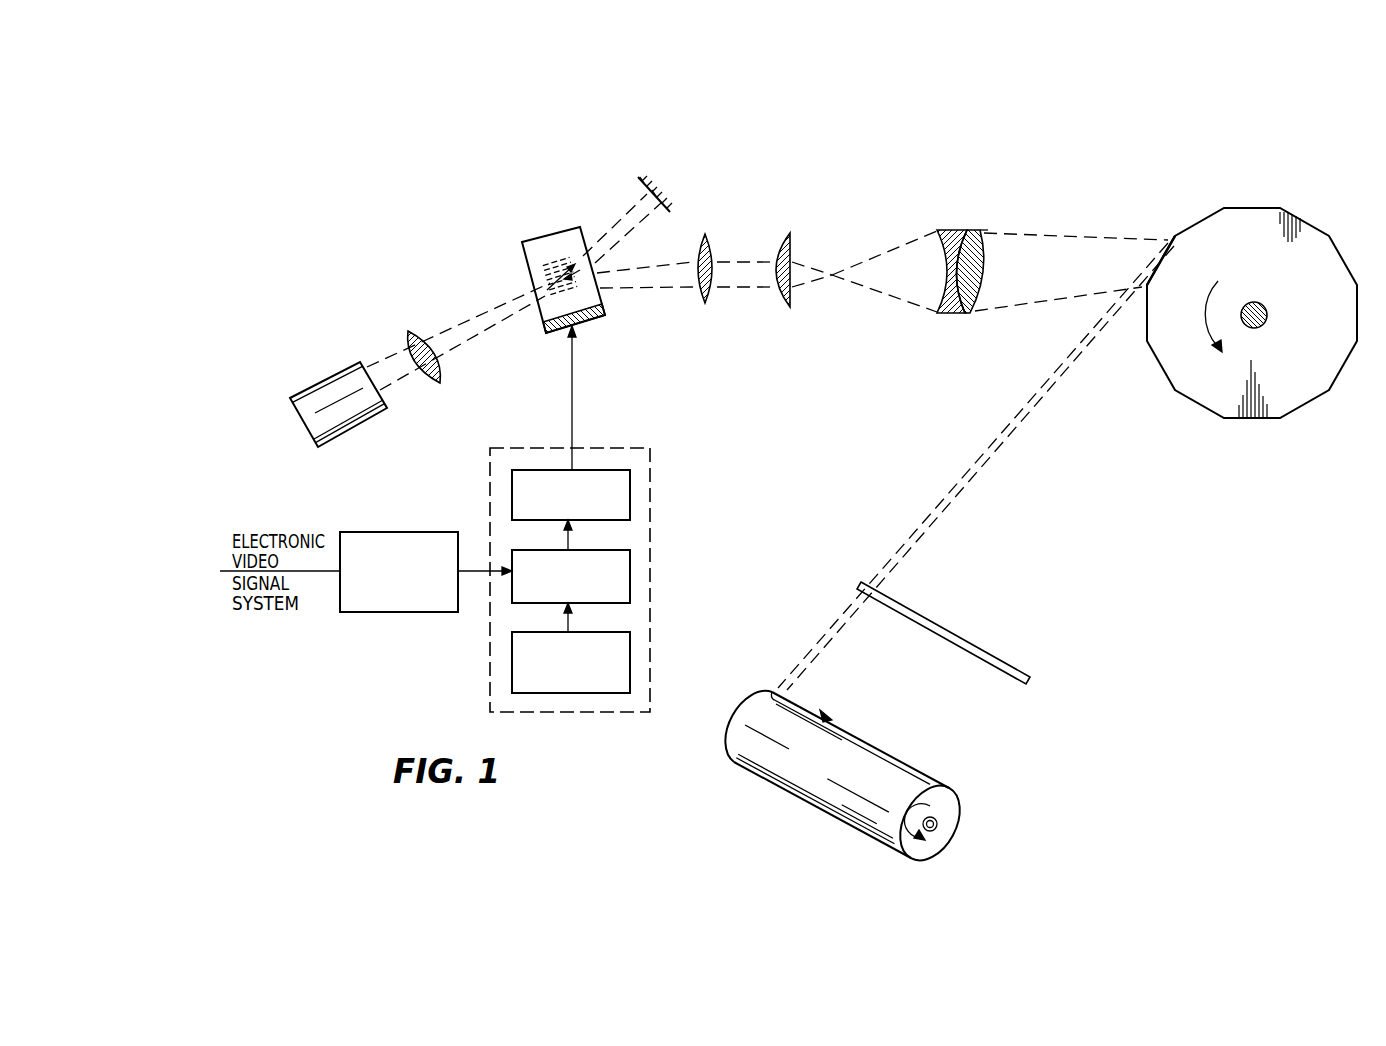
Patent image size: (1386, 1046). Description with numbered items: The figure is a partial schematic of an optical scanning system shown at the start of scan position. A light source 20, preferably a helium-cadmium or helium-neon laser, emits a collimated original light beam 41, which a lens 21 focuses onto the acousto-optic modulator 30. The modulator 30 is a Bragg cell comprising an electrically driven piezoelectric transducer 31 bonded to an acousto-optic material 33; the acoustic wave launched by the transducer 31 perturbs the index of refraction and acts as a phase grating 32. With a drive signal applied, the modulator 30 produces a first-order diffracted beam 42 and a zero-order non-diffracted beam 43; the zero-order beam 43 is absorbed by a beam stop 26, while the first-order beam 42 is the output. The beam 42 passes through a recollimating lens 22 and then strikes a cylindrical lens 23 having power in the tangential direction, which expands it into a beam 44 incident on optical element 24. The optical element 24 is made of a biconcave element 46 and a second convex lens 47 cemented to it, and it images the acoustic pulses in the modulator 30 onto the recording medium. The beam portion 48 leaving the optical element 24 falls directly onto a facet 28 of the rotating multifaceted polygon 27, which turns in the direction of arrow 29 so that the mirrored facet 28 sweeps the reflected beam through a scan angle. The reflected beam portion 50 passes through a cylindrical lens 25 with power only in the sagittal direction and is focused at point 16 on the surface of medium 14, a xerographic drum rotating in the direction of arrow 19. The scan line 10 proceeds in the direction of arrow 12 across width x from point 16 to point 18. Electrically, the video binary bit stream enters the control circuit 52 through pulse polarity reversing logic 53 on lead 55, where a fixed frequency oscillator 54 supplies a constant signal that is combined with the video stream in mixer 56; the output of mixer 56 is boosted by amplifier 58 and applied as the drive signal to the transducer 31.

The scan line 10 is at (893, 748).
The arrow 12 is at (830, 705).
The medium 14 is at (859, 758).
The point 16 is at (777, 688).
The point 18 is at (953, 791).
The arrow 19 is at (955, 819).
The light source 20 is at (330, 371).
The lens 21 is at (420, 331).
The recollimating lens 22 is at (694, 304).
The cylindrical lens 23 is at (782, 303).
The optical element 24 is at (964, 225).
The cylindrical lens 25 is at (984, 641).
The beam stop 26 is at (664, 184).
The rotating multifaceted polygon 27 is at (1226, 313).
The facet 28 is at (1160, 258).
The arrow 29 is at (1204, 317).
The acousto-optic modulator 30 is at (544, 277).
The piezoelectric transducer 31 is at (588, 330).
The phase grating 32 is at (553, 298).
The acousto-optic material 33 is at (528, 266).
The light beam 41 is at (385, 360).
The first-order diffracted beam 42 is at (670, 264).
The zero-order non-diffracted beam 43 is at (618, 215).
The beam 44 is at (880, 293).
The biconcave element 46 is at (959, 230).
The convex lens 47 is at (984, 232).
The beam portion 48 is at (1082, 236).
The beam portion 50 is at (1001, 424).
The control circuit 52 is at (572, 519).
The pulse polarity reversing logic 53 is at (394, 531).
The fixed frequency oscillator 54 is at (630, 640).
The lead 55 is at (480, 574).
The mixer 56 is at (630, 568).
The amplifier 58 is at (512, 473).